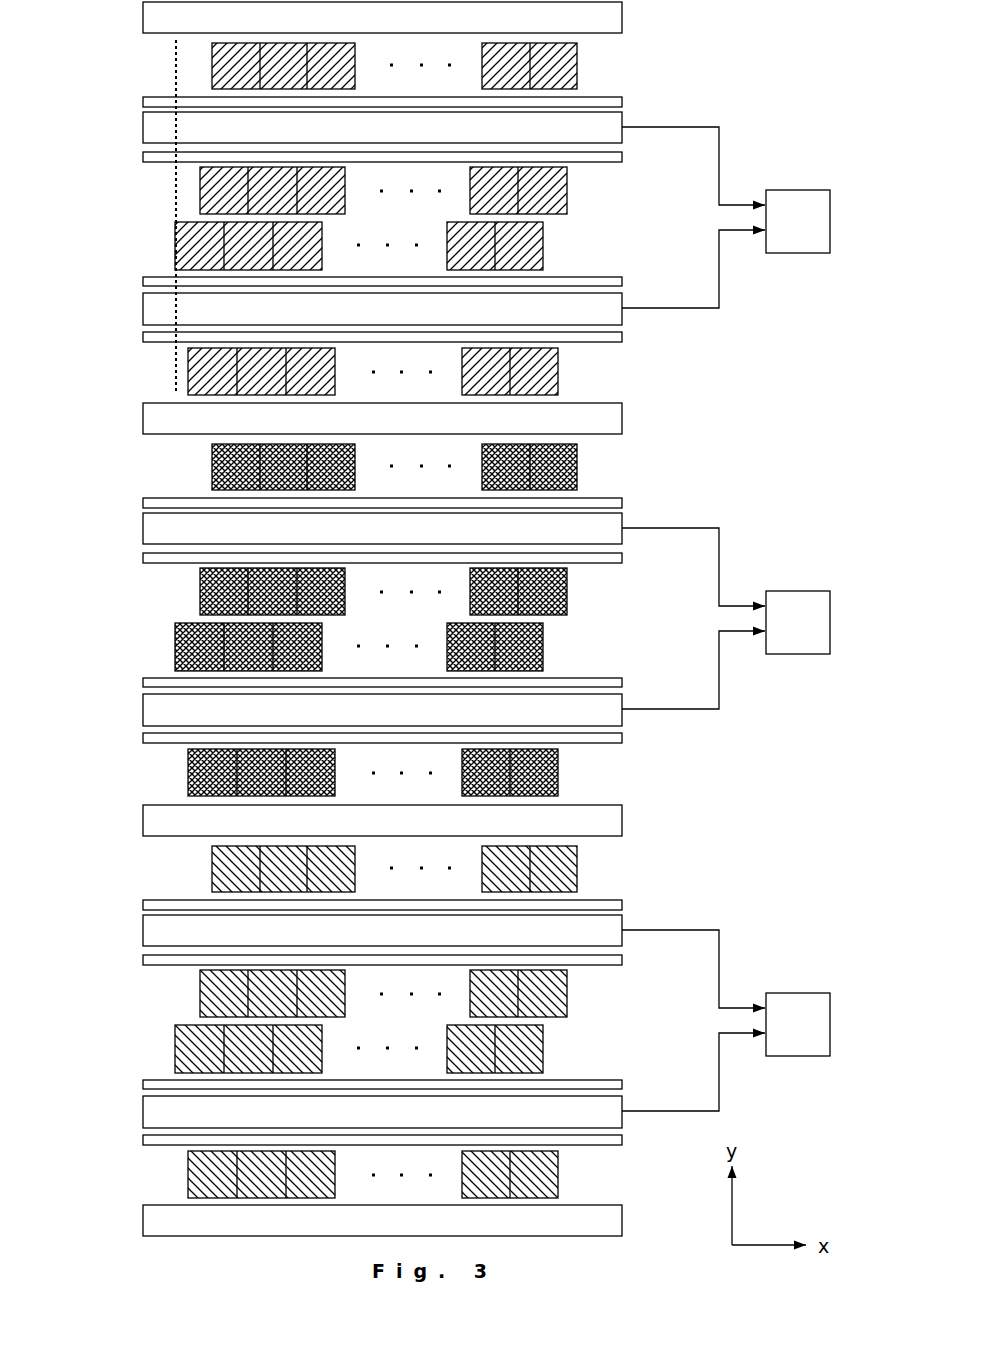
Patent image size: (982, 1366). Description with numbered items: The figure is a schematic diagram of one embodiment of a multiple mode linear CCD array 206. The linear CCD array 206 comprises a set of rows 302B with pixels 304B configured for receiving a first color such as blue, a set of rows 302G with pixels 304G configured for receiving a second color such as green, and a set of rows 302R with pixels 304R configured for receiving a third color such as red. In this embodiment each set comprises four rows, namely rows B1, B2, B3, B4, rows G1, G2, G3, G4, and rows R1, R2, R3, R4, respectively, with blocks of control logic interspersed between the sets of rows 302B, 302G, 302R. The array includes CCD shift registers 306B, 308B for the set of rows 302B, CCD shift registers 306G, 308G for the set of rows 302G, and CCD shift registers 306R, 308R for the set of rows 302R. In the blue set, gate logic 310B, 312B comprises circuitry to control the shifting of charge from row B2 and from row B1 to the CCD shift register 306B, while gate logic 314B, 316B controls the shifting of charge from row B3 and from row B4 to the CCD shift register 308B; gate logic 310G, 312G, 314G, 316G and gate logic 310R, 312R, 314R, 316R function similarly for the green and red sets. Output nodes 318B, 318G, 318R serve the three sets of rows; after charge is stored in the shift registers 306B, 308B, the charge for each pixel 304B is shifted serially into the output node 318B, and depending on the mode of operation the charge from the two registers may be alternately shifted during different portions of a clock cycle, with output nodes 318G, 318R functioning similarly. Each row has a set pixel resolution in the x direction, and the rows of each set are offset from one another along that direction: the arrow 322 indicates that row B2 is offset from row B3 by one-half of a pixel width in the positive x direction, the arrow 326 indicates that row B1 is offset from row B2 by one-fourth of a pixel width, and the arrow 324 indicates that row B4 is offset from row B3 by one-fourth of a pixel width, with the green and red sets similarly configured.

The multiple mode linear CCD array 206 is at (113, 1234).
The set of rows 302B is at (110, 42).
The set of rows 302G is at (110, 443).
The set of rows 302R is at (110, 845).
The pixel 304B is at (567, 205).
The pixel 304G is at (567, 606).
The pixel 304R is at (567, 1008).
The CCD shift register 306B is at (525, 139).
The CCD shift register 306G is at (525, 540).
The CCD shift register 306R is at (525, 942).
The CCD shift register 308B is at (525, 320).
The CCD shift register 308G is at (525, 721).
The CCD shift register 308R is at (525, 1123).
The gate logic 310B is at (622, 157).
The gate logic 310G is at (622, 558).
The gate logic 310R is at (622, 960).
The gate logic 312B is at (622, 101).
The gate logic 312G is at (622, 502).
The gate logic 312R is at (622, 904).
The gate logic 314B is at (622, 281).
The gate logic 314G is at (622, 682).
The gate logic 314R is at (622, 1084).
The gate logic 316B is at (622, 337).
The gate logic 316G is at (622, 738).
The gate logic 316R is at (622, 1140).
The output node 318B is at (792, 253).
The output node 318G is at (792, 654).
The output node 318R is at (792, 1056).
The arrow 322 is at (199, 192).
The arrow 324 is at (187, 373).
The arrow 326 is at (211, 63).
The row B1 is at (398, 66).
The row B2 is at (392, 192).
The row B3 is at (555, 247).
The row B4 is at (386, 371).
The row G1 is at (606, 457).
The row G2 is at (434, 594).
The row G3 is at (555, 648).
The row G4 is at (579, 770).
The row R1 is at (604, 858).
The row R2 is at (433, 996).
The row R3 is at (555, 1050).
The row R4 is at (579, 1173).